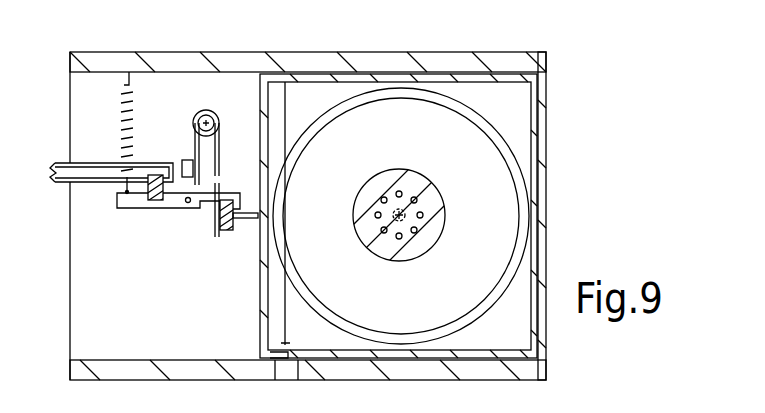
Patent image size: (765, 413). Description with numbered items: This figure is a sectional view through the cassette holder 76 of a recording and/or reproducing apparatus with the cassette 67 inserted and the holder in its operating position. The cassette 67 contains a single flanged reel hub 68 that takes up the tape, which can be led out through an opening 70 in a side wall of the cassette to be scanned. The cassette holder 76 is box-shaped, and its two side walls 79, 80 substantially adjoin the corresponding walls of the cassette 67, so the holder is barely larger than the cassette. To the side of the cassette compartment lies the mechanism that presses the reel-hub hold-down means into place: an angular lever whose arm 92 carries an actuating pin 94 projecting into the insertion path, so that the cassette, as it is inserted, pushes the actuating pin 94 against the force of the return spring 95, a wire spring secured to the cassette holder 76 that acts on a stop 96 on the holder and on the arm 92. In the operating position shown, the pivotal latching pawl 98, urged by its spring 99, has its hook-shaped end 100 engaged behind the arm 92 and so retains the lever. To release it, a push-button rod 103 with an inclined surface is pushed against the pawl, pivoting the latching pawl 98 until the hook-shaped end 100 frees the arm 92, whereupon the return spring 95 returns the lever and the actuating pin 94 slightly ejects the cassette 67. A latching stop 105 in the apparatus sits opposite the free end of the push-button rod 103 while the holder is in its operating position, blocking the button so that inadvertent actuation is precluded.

The cassette 67 is at (540, 197).
The reel hub 68 is at (433, 196).
The opening 70 is at (285, 360).
The cassette holder 76 is at (437, 50).
The side wall 79 is at (437, 372).
The side wall 80 is at (303, 60).
The arm 92 is at (226, 230).
The actuating pin 94 is at (248, 219).
The return spring 95 is at (218, 128).
The stop 96 is at (185, 160).
The latching pawl 98 is at (135, 204).
The spring 99 is at (122, 120).
The hook-shaped end 100 is at (237, 204).
The push-button rod 103 is at (158, 190).
The latching stop 105 is at (98, 178).